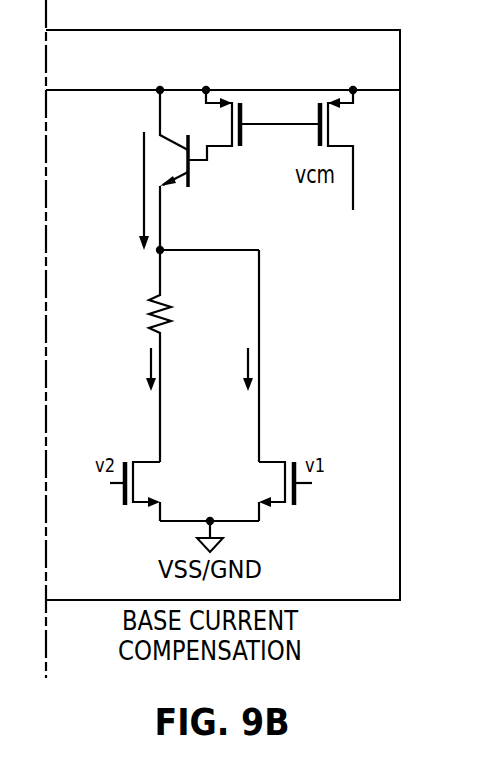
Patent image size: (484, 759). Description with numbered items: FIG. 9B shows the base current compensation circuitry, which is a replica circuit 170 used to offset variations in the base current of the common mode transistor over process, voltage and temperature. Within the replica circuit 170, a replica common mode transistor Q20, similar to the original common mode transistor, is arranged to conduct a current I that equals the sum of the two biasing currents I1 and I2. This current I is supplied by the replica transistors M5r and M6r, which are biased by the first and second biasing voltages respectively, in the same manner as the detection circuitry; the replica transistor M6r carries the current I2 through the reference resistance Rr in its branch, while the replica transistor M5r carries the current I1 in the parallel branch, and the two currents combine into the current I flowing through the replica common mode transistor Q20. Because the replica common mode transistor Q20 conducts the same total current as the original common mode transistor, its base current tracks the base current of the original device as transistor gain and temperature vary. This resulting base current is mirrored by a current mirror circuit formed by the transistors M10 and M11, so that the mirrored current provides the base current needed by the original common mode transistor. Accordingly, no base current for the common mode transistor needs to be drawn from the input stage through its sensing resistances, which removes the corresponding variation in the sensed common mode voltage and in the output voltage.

The replica circuit 170 is at (305, 333).
The current mirror transistor M11 is at (245, 125).
The current mirror transistor M10 is at (354, 150).
The replica common mode transistor Q20 is at (187, 170).
The reference resistance Rr is at (176, 356).
The replica transistor M6r is at (150, 491).
The replica transistor M5r is at (270, 491).
The current I is at (140, 191).
The biasing current I1 is at (234, 369).
The biasing current I2 is at (137, 369).